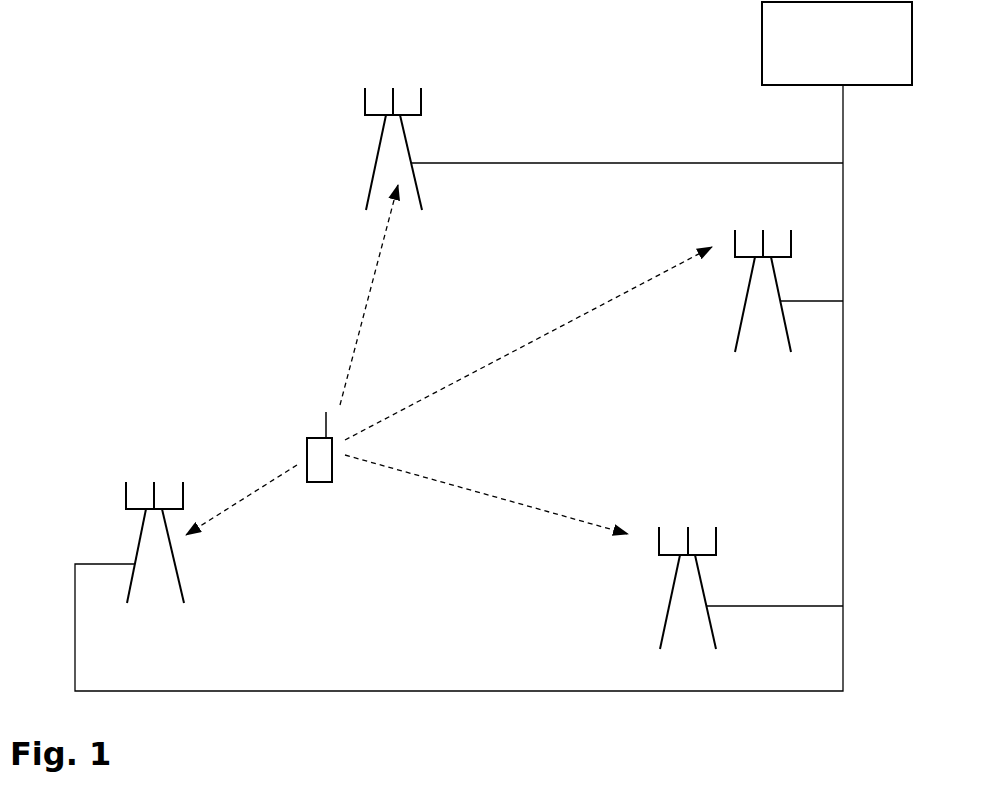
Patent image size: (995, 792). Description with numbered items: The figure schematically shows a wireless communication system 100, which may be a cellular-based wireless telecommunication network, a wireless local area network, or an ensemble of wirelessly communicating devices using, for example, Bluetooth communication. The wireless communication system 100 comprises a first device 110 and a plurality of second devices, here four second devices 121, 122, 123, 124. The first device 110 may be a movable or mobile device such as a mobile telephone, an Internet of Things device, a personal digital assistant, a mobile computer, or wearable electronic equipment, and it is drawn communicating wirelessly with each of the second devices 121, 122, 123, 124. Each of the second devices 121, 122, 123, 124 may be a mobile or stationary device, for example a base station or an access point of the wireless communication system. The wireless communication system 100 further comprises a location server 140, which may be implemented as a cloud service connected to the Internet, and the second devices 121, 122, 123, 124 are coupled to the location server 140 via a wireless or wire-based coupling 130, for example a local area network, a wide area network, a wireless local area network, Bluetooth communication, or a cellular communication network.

The wireless communication system 100 is at (99, 46).
The first device 110 is at (330, 440).
The second device 121 is at (121, 480).
The second device 122 is at (362, 85).
The second device 123 is at (731, 228).
The second device 124 is at (655, 525).
The coupling 130 is at (843, 185).
The location server 140 is at (762, 42).